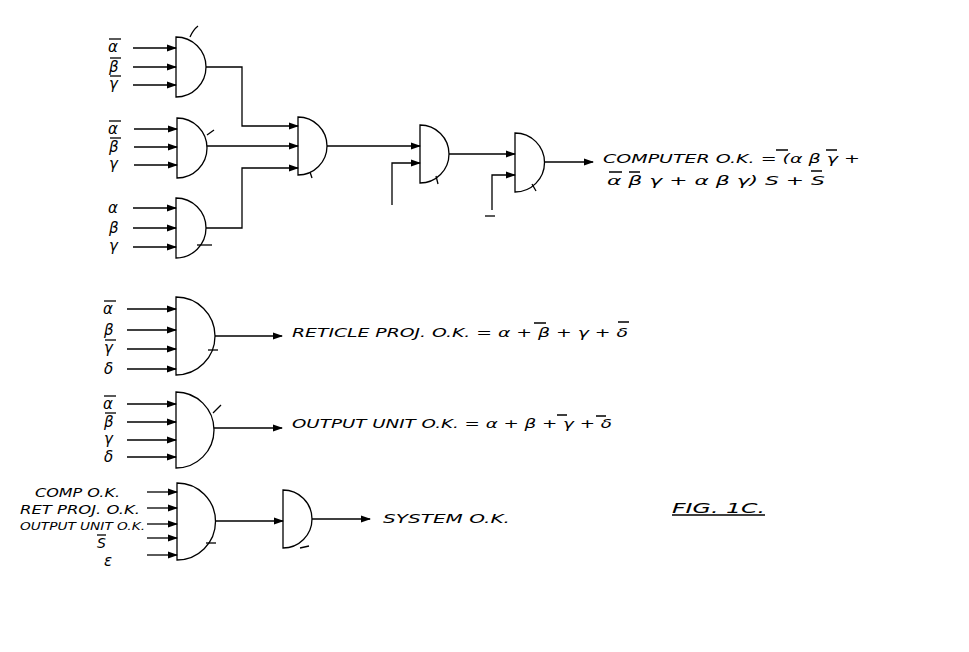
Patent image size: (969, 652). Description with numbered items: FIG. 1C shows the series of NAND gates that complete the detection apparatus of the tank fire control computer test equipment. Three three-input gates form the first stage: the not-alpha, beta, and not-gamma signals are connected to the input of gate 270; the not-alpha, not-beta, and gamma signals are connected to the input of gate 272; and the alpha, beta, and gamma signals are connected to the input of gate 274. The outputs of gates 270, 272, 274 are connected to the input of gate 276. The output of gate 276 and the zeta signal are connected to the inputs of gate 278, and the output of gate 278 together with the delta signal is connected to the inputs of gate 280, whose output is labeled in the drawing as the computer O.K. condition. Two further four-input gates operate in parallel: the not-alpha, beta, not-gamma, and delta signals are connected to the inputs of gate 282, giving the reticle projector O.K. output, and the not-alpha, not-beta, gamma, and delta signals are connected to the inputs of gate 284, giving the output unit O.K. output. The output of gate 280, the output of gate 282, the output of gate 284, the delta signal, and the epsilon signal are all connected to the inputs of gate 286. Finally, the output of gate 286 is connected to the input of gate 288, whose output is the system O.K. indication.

The gate 270 is at (202, 58).
The gate 272 is at (199, 133).
The gate 274 is at (200, 208).
The gate 276 is at (320, 122).
The gate 278 is at (440, 132).
The gate 280 is at (527, 143).
The gate 282 is at (200, 310).
The gate 284 is at (205, 410).
The gate 286 is at (205, 492).
The gate 288 is at (303, 495).